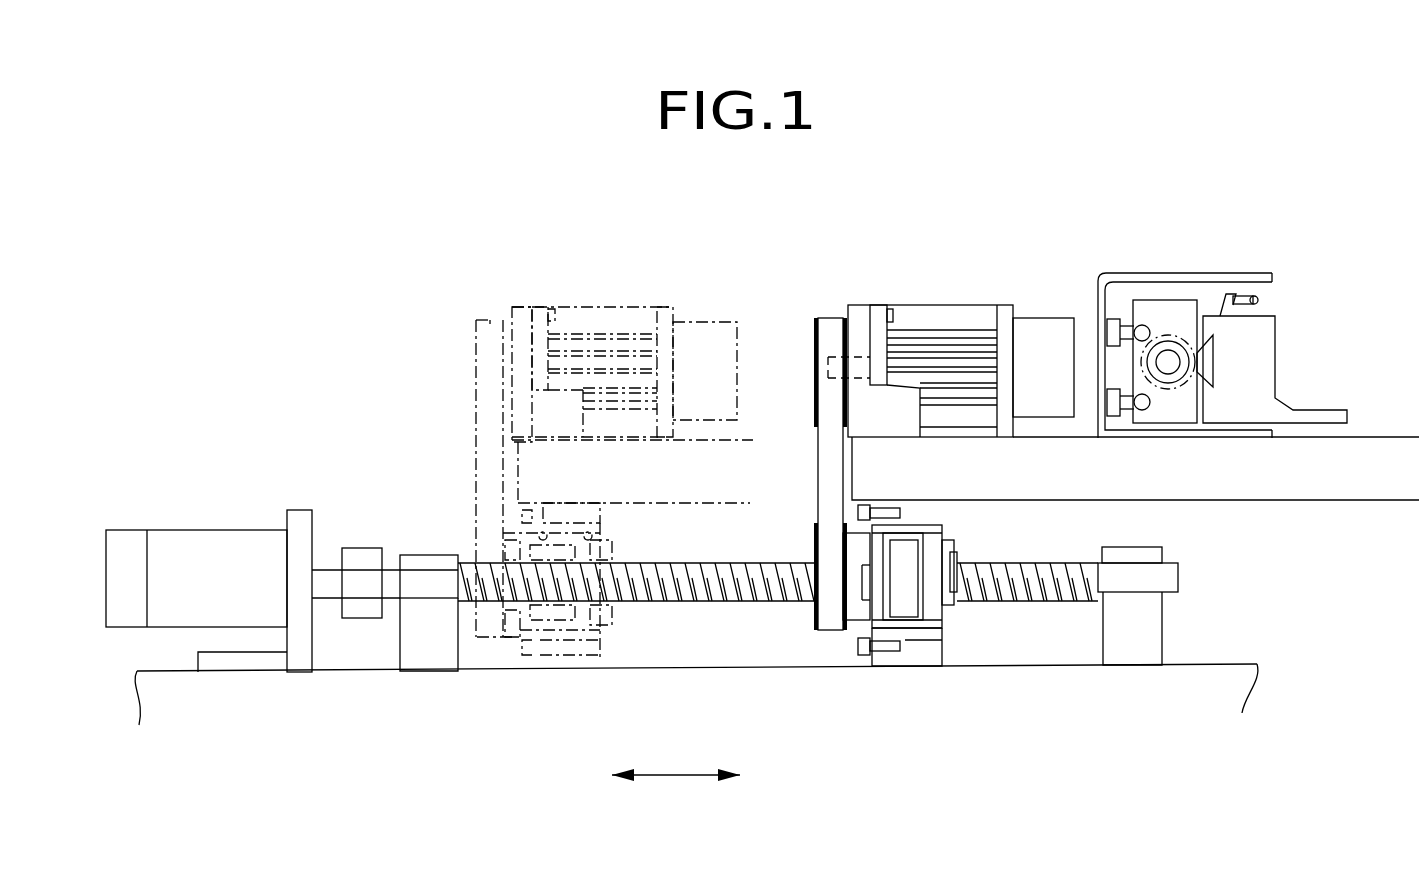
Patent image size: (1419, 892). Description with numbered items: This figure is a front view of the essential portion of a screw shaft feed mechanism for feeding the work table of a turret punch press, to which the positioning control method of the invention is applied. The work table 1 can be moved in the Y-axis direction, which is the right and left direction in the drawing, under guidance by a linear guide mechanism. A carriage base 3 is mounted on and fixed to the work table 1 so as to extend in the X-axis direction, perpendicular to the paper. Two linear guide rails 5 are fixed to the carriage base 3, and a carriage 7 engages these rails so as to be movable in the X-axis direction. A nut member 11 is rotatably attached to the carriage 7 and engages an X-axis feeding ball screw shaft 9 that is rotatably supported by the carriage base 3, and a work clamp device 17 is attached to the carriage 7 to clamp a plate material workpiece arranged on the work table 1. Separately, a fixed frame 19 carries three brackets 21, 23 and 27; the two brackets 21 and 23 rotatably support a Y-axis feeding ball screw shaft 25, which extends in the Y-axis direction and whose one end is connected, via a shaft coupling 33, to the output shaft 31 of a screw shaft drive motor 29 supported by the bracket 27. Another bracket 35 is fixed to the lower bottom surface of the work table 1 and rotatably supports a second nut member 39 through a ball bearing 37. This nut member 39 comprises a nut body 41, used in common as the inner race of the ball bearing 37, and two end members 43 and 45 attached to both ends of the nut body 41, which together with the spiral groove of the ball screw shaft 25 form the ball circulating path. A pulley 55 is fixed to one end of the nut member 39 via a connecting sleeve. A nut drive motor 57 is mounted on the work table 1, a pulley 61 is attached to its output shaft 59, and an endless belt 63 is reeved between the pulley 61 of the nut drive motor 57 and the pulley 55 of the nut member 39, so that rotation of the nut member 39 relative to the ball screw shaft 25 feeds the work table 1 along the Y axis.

The work table 1 is at (1323, 485).
The carriage base 3 is at (1115, 278).
The linear guide rails 5 is at (1135, 395).
The carriage 7 is at (1157, 305).
The X-axis feeding ball screw shaft 9 is at (1167, 357).
The nut member 11 is at (1195, 297).
The work clamp device 17 is at (1262, 365).
The fixed frame 19 is at (715, 685).
The bracket 21 is at (425, 563).
The bracket 23 is at (1145, 625).
The Y-axis feeding ball screw shaft 25 is at (745, 568).
The bracket 27 is at (300, 533).
The screw shaft drive motor 29 is at (195, 543).
The output shaft 31 is at (325, 590).
The shaft coupling 33 is at (365, 605).
The bracket 35 is at (930, 648).
The ball bearing 37 is at (918, 633).
The nut member 39 is at (897, 600).
The nut body 41 is at (945, 610).
The end member 43 is at (955, 552).
The end member 45 is at (855, 575).
The pulley 55 is at (812, 612).
The nut drive motor 57 is at (925, 305).
The output shaft 59 is at (828, 357).
The pulley 61 is at (818, 342).
The endless belt 63 is at (826, 468).